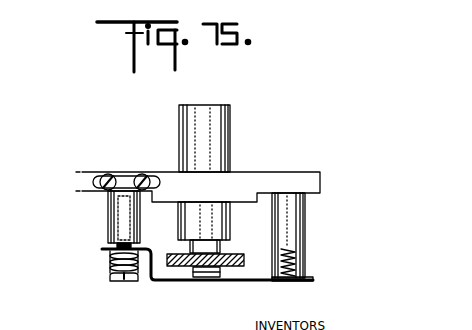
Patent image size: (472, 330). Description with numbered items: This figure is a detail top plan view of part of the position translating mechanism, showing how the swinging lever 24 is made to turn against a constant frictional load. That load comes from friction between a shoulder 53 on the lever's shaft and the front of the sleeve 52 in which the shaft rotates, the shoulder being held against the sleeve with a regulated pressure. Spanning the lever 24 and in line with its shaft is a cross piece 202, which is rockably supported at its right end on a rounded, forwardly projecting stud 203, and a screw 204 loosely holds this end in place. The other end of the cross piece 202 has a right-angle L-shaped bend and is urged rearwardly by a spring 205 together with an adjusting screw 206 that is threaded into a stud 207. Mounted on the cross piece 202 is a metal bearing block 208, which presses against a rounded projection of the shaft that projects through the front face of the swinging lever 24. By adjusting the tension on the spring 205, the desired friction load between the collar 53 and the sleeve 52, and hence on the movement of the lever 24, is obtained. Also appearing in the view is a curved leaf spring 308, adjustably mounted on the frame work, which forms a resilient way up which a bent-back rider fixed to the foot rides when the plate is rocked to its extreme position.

The sleeve 52 is at (187, 116).
The curved leaf spring 308 is at (177, 185).
The stud 207 is at (110, 213).
The spring 205 is at (112, 267).
The adjusting screw 206 is at (120, 281).
The cross piece 202 is at (169, 281).
The shoulder 53 is at (213, 247).
The swinging lever 24 is at (228, 260).
The metal bearing block 208 is at (197, 276).
The stud 203 is at (294, 218).
The screw 204 is at (300, 257).